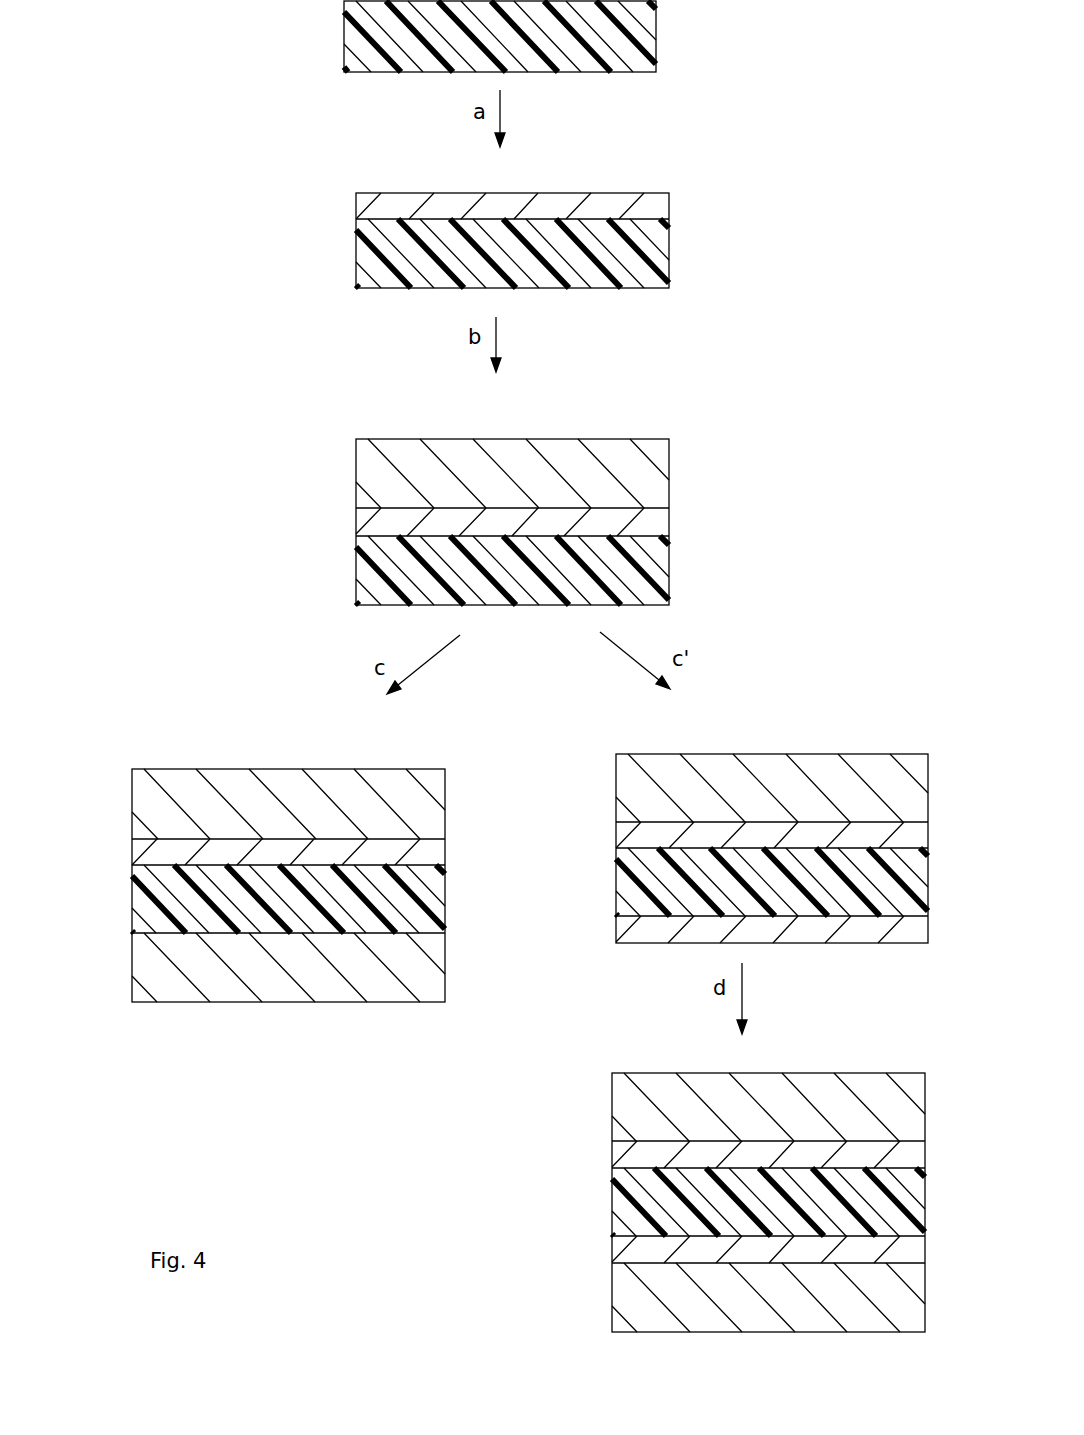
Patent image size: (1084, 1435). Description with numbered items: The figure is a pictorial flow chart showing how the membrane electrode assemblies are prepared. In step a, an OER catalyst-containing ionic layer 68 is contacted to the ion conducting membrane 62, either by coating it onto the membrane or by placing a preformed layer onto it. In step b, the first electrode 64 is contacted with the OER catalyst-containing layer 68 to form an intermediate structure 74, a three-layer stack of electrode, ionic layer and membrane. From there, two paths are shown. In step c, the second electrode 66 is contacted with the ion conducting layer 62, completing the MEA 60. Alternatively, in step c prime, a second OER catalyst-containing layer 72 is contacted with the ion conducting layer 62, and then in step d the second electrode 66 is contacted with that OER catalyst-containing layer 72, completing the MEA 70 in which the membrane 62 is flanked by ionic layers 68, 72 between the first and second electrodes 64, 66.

The MEA 60 is at (110, 732).
The ion conducting membrane 62 is at (344, 28).
The first electrode 64 is at (356, 462).
The second electrode 66 is at (132, 972).
The OER catalyst-containing ionic layer 68 is at (356, 205).
The MEA 70 is at (894, 1047).
The OER catalyst-containing ionic layer 72 is at (616, 925).
The intermediate structure 74 is at (704, 426).